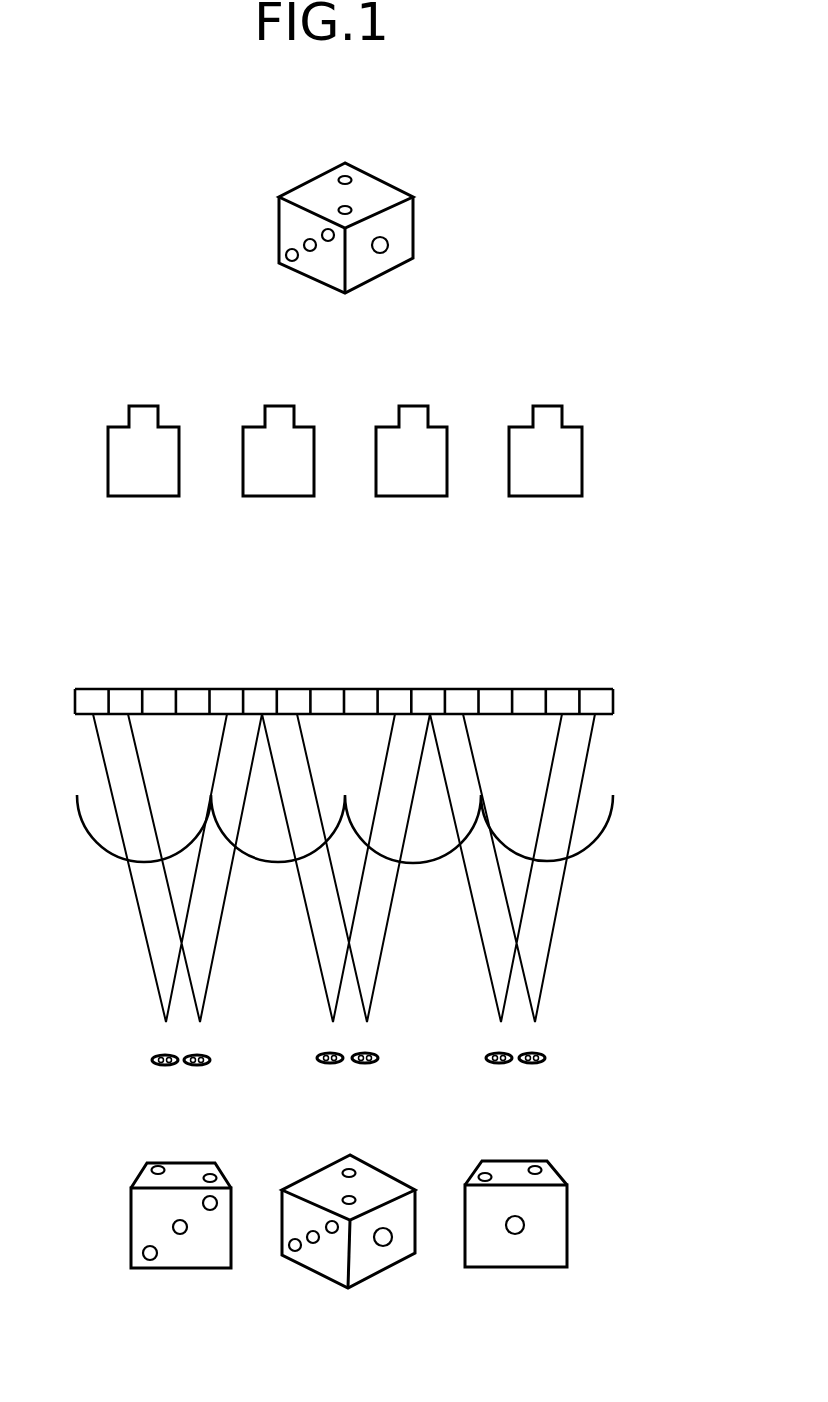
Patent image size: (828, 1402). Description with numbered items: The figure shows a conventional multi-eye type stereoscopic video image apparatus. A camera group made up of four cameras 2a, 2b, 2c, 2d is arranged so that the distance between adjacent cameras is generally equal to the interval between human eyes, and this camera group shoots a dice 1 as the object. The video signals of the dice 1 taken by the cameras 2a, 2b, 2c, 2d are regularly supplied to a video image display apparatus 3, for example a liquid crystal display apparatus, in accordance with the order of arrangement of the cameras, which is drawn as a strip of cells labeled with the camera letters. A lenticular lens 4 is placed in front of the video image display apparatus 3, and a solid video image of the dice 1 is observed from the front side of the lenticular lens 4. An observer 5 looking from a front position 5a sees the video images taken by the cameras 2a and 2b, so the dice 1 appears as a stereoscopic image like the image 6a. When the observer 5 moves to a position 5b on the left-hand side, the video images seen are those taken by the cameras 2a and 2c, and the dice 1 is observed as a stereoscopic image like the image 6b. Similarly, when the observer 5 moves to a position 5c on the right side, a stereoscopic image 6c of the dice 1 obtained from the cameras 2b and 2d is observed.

The dice 1 is at (413, 197).
The camera 2a is at (284, 496).
The camera 2b is at (422, 496).
The camera 2c is at (150, 496).
The camera 2d is at (553, 496).
The video image display apparatus 3 is at (598, 689).
The lenticular lens 4 is at (595, 840).
The observer 5 is at (428, 1073).
The front position 5a is at (375, 1063).
The position on the left-hand side 5b is at (208, 1063).
The position on the right side 5c is at (542, 1063).
The image 6a is at (378, 1273).
The image 6b is at (165, 1268).
The stereoscopic image 6c is at (533, 1267).